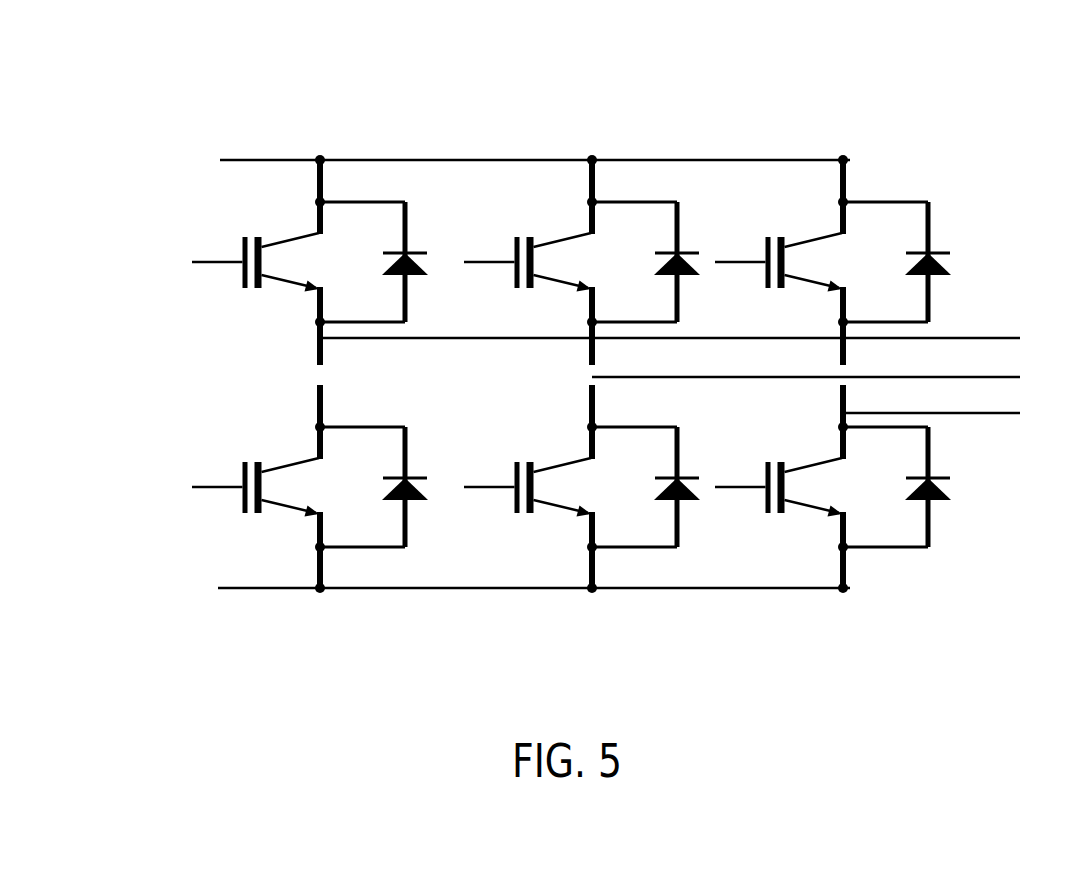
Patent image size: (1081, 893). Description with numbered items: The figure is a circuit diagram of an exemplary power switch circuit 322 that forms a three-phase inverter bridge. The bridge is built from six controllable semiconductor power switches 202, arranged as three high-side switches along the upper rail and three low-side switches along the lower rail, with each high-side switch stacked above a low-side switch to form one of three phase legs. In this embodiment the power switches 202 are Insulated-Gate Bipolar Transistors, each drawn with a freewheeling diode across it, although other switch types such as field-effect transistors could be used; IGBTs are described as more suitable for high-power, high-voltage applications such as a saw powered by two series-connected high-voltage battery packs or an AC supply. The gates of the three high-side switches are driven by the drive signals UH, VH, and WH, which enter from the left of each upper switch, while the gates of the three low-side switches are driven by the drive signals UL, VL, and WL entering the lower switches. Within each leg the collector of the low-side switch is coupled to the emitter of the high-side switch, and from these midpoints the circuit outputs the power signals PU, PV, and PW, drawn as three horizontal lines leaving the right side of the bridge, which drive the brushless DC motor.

The controllable semiconductor power switch 202 is at (582, 376).
The power switch circuit 322 is at (190, 53).
The power signal PU is at (690, 338).
The power signal PV is at (826, 377).
The power signal PW is at (955, 413).
The drive signal UH is at (205, 247).
The drive signal VH is at (481, 247).
The drive signal WH is at (739, 247).
The drive signal UL is at (205, 472).
The drive signal VL is at (481, 472).
The drive signal WL is at (739, 472).